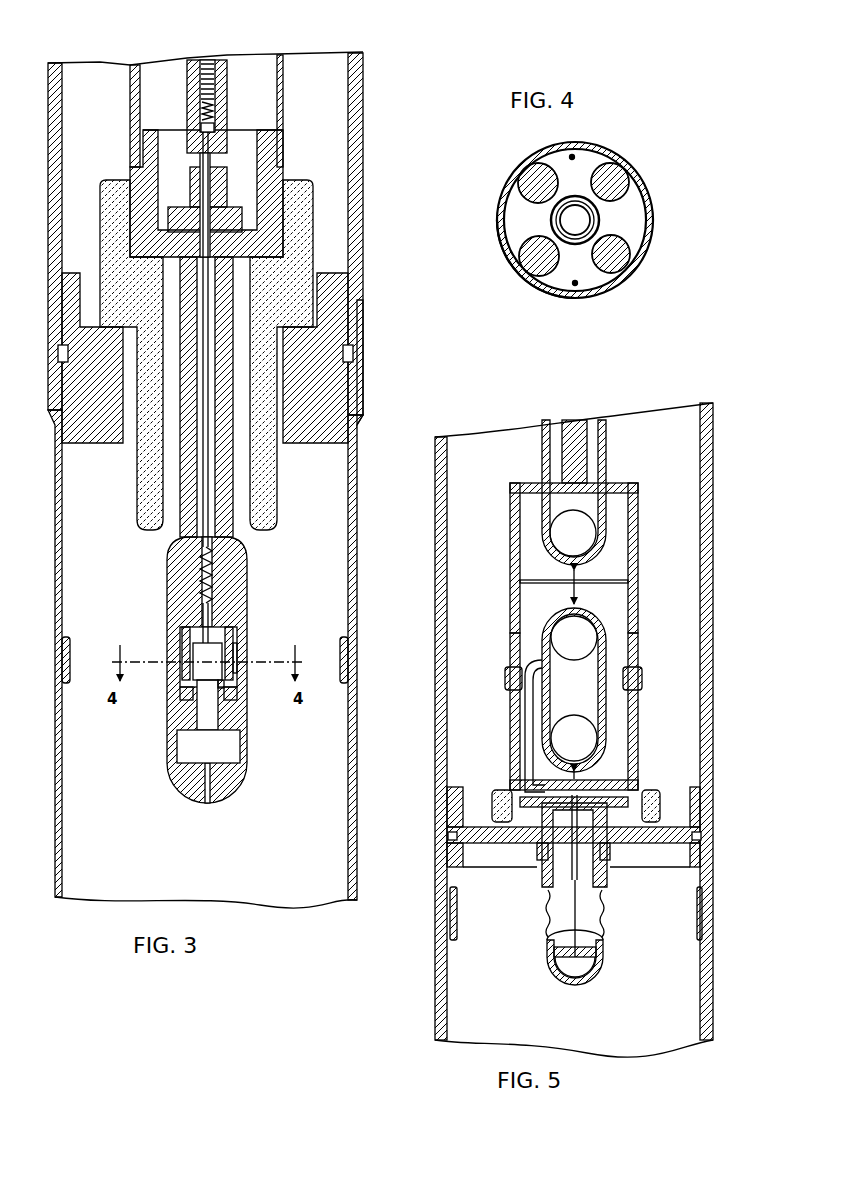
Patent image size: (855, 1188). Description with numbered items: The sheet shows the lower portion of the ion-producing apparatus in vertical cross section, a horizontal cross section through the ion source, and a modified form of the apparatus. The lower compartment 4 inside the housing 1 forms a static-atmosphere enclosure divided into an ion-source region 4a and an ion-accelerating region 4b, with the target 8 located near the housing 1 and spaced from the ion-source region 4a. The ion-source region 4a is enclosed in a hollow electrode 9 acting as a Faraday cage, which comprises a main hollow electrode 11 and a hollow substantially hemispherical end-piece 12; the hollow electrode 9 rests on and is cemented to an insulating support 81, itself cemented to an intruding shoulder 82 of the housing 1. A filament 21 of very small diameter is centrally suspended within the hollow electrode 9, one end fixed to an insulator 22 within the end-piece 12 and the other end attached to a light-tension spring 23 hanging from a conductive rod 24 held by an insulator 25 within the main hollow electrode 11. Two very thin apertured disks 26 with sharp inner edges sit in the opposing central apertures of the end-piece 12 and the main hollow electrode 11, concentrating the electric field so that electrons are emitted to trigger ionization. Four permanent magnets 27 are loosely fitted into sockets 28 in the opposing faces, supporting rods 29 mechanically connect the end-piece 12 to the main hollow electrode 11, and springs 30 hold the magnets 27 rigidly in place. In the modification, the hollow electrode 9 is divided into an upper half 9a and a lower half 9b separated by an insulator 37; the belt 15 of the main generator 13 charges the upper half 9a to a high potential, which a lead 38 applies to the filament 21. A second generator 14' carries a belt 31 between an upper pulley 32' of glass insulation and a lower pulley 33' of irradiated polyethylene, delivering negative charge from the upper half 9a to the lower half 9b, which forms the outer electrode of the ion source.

In FIG. 3, the housing 1 is at (364, 200).
In FIG. 3, the lower compartment 4 is at (80, 810).
In FIG. 3, the ion-source region 4a is at (193, 675).
In FIG. 5, the ion-source region 4a is at (562, 927).
In FIG. 3, the ion-accelerating region 4b is at (330, 616).
In FIG. 5, the ion-accelerating region 4b is at (492, 940).
In FIG. 5, the target 8 is at (700, 928).
In FIG. 3, the hollow electrode 9 is at (324, 107).
In FIG. 5, the hollow electrode 9 is at (684, 614).
In FIG. 5, the upper half of hollow electrode 9a is at (640, 548).
In FIG. 5, the lower half of hollow electrode 9b is at (640, 772).
In FIG. 3, the main hollow electrode 11 is at (272, 181).
In FIG. 3, the end-piece 12 is at (194, 797).
In FIG. 5, the main generator 13 is at (622, 424).
In FIG. 5, the second generator 14' is at (598, 585).
In FIG. 5, the belt of main generator 15 is at (604, 470).
In FIG. 3, the filament 21 is at (216, 633).
In FIG. 4, the filament 21 is at (575, 219).
In FIG. 5, the filament 21 is at (601, 947).
In FIG. 3, the insulator 22 is at (200, 745).
In FIG. 3, the light-tension spring 23 is at (210, 588).
In FIG. 3, the conductive rod 24 is at (200, 523).
In FIG. 3, the insulator 25 is at (178, 205).
In FIG. 3, the apertured disks 26 is at (182, 665).
In FIG. 4, the apertured disks 26 is at (596, 224).
In FIG. 3, the permanent magnets 27 is at (238, 657).
In FIG. 4, the permanent magnets 27 is at (602, 275).
In FIG. 3, the sockets 28 is at (180, 638).
In FIG. 4, the supporting rods 29 is at (575, 155).
In FIG. 3, the springs 30 is at (222, 690).
In FIG. 5, the belt of second generator 31 is at (600, 690).
In FIG. 5, the upper pulley 32' is at (560, 625).
In FIG. 5, the lower pulley 33' is at (587, 746).
In FIG. 5, the insulator 37 is at (643, 686).
In FIG. 5, the lead 38 is at (530, 716).
In FIG. 3, the insulating support 81 is at (306, 224).
In FIG. 5, the insulating support 81 is at (655, 816).
In FIG. 3, the intruding shoulder 82 is at (352, 335).
In FIG. 5, the intruding shoulder 82 is at (714, 828).